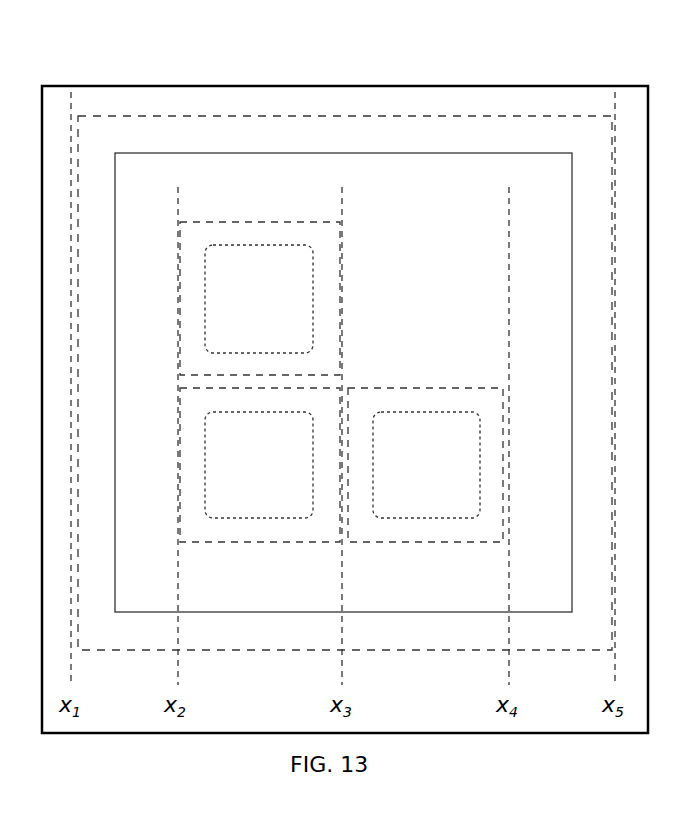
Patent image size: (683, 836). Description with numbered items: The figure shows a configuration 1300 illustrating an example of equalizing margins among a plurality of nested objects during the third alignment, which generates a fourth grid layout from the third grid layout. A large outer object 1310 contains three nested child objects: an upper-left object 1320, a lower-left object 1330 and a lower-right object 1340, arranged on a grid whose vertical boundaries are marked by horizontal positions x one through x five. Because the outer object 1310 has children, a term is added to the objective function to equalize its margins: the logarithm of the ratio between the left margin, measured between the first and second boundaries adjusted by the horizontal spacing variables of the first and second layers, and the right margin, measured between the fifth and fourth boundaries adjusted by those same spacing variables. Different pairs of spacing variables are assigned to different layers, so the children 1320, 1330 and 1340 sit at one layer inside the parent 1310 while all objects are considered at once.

The image/layout 1300 is at (120, 35).
The shaded region 1310 is at (440, 188).
The first sub-region 1320 is at (279, 308).
The second sub-region 1330 is at (279, 470).
The third sub-region 1340 is at (451, 470).